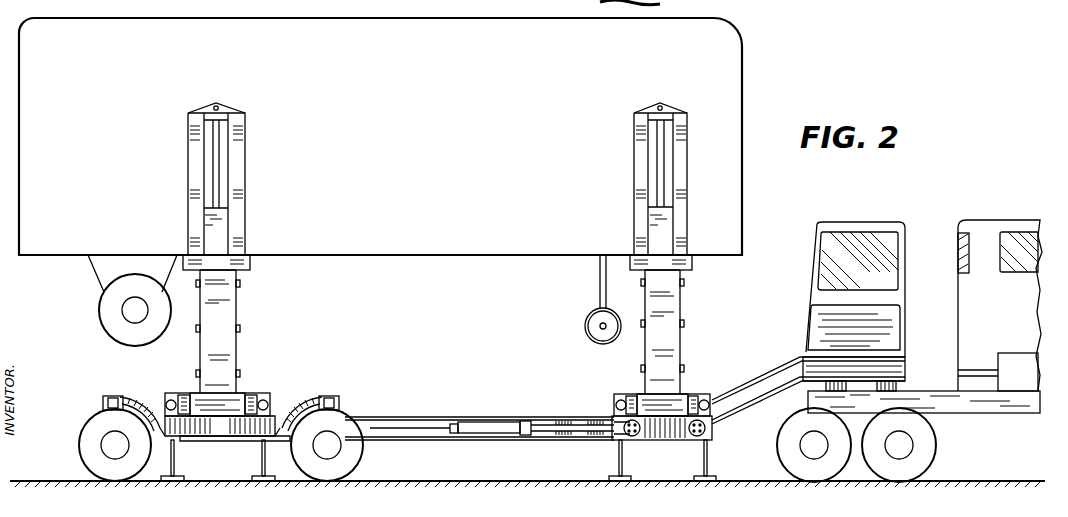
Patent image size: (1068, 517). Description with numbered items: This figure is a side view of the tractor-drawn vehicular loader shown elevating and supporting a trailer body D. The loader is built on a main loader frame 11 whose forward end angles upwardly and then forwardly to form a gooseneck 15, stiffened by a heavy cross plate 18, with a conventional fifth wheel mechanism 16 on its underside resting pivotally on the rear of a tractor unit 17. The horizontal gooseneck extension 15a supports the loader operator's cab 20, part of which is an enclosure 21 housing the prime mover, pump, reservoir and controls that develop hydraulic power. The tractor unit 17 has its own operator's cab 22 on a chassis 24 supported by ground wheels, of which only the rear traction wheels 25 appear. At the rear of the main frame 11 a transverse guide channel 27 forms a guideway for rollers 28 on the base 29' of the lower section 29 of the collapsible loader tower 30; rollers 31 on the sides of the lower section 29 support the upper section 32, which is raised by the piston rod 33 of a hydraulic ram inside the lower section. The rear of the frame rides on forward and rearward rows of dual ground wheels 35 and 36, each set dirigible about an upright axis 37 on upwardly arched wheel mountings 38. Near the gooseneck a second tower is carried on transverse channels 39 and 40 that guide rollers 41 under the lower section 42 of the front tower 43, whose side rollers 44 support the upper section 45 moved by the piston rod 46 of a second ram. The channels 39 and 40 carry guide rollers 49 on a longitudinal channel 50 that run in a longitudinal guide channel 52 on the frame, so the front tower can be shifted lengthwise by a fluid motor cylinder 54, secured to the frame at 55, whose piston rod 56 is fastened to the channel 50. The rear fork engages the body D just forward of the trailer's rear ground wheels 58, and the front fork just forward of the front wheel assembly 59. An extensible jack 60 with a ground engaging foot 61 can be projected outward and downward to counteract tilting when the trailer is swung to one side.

The trailer body D is at (471, 255).
The main loader frame 11 is at (450, 415).
The gooseneck 15 is at (740, 416).
The horizontal gooseneck extension 15a is at (892, 360).
The fifth wheel mechanism 16 is at (886, 381).
The tractor unit 17 is at (1000, 203).
The cross plate 18 is at (766, 376).
The cab 20 is at (903, 220).
The enclosure 21 is at (813, 318).
The operator's cab 22 is at (961, 283).
The chassis 24 is at (975, 412).
The rear traction wheels 25 is at (885, 420).
The guide channel 27 is at (176, 396).
The rollers 28 is at (183, 395).
The lower section 29 is at (237, 306).
The base 29' is at (217, 379).
The loader tower 30 is at (244, 240).
The rollers 31 is at (240, 328).
The upper section 32 is at (236, 190).
The piston rod 33 is at (219, 156).
The ground wheels 35 is at (352, 410).
The ground wheels 36 is at (84, 428).
The upright axis 37 is at (113, 396).
The wheel mountings 38 is at (133, 398).
The channel 39 is at (707, 396).
The channel 40 is at (618, 398).
The rollers 41 is at (631, 396).
The lower section 42 is at (682, 306).
The front tower 43 is at (690, 226).
The side rollers 44 is at (640, 283).
The upper section 45 is at (688, 178).
The piston rod 46 is at (670, 132).
The guide rollers 49 is at (692, 434).
The longitudinal channel 50 is at (616, 436).
The longitudinal guide channel 52 is at (527, 436).
The fluid motor cylinder 54 is at (492, 434).
The cylinder attachment 55 is at (452, 434).
The piston rod 56 is at (566, 436).
The rear ground wheels 58 is at (108, 308).
The front wheel assembly 59 is at (589, 313).
The extensible jack 60 is at (262, 456).
The ground engaging foot 61 is at (254, 476).